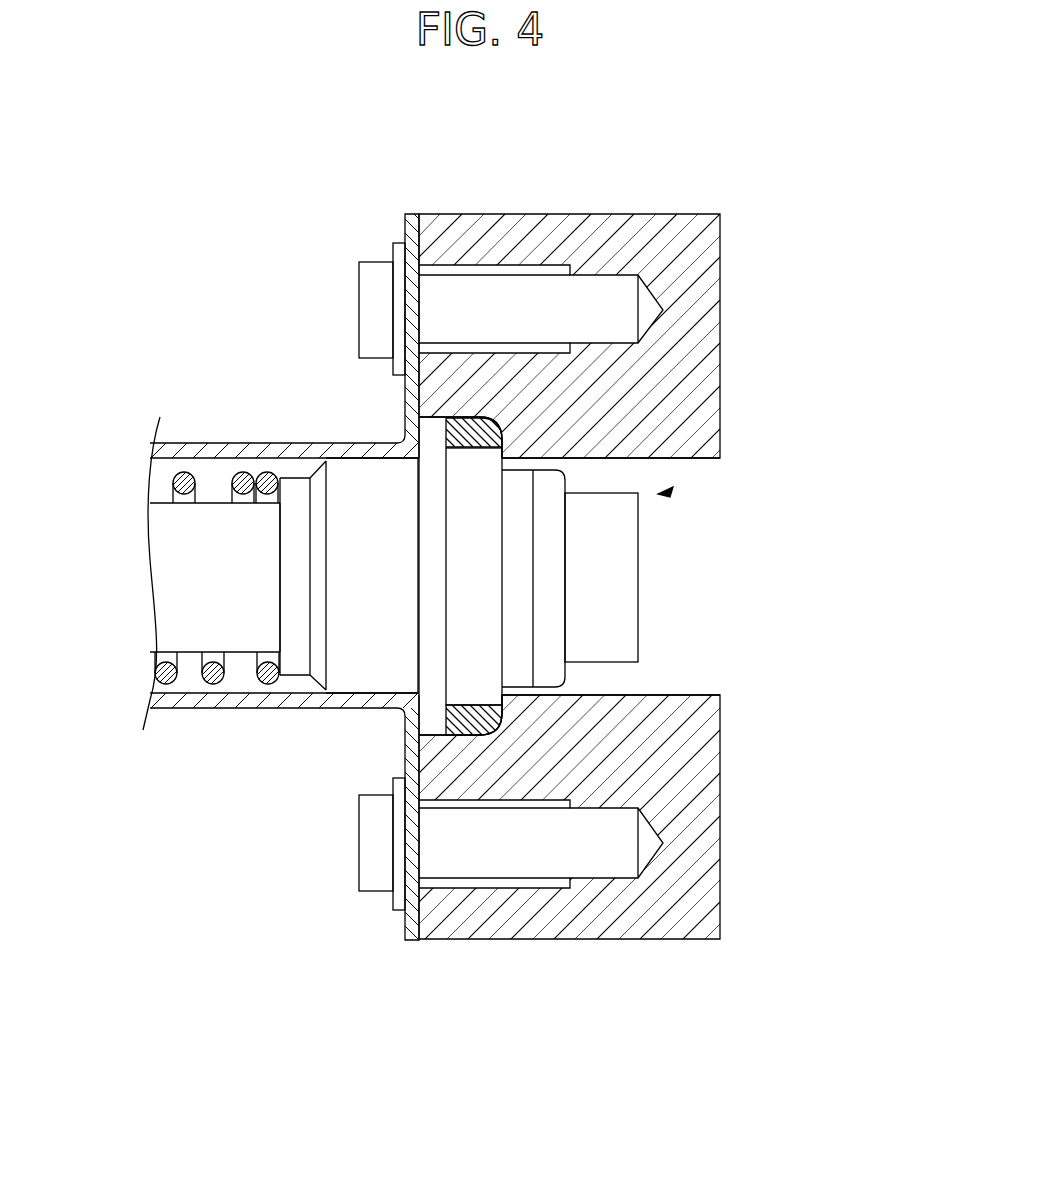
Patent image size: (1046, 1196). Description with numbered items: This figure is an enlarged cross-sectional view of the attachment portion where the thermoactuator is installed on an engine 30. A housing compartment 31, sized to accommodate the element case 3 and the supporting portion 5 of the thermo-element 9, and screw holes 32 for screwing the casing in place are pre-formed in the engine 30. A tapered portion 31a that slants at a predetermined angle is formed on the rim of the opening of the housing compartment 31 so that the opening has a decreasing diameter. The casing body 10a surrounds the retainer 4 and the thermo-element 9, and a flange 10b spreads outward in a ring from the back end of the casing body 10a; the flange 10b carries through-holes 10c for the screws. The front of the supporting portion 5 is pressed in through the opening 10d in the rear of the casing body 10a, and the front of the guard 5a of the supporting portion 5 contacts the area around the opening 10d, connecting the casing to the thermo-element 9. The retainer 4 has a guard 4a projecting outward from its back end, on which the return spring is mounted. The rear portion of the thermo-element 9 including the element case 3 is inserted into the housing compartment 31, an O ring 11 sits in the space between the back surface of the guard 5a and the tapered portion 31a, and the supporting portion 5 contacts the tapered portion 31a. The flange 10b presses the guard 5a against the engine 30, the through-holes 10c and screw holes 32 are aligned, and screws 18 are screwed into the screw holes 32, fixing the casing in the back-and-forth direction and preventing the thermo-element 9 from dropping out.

The element case 3 is at (620, 573).
The retainer 4 is at (172, 565).
The guard 4a is at (297, 598).
The supporting portion 5 is at (360, 677).
The guard 5a is at (432, 543).
The thermo-element 9 is at (668, 492).
The casing body 10a is at (213, 440).
The flange 10b is at (403, 227).
The through-holes 10c is at (410, 360).
The opening 10d is at (398, 487).
The O ring 11 is at (460, 428).
The screws 18 is at (373, 320).
The engine 30 is at (662, 253).
The housing compartment 31 is at (655, 695).
The tapered portion 31a is at (495, 428).
The screw holes 32 is at (500, 352).